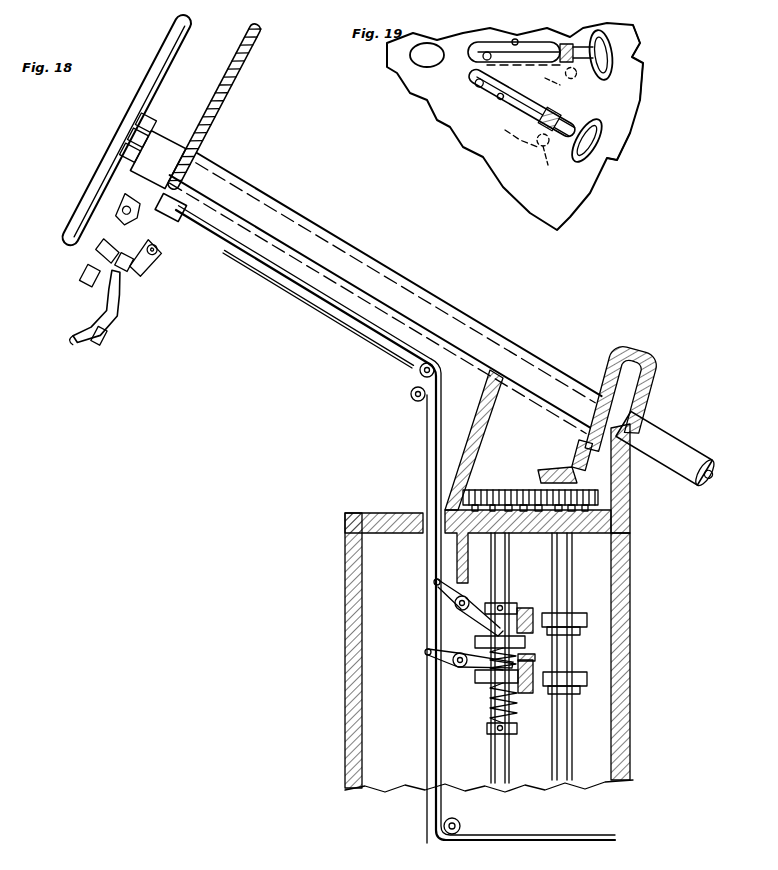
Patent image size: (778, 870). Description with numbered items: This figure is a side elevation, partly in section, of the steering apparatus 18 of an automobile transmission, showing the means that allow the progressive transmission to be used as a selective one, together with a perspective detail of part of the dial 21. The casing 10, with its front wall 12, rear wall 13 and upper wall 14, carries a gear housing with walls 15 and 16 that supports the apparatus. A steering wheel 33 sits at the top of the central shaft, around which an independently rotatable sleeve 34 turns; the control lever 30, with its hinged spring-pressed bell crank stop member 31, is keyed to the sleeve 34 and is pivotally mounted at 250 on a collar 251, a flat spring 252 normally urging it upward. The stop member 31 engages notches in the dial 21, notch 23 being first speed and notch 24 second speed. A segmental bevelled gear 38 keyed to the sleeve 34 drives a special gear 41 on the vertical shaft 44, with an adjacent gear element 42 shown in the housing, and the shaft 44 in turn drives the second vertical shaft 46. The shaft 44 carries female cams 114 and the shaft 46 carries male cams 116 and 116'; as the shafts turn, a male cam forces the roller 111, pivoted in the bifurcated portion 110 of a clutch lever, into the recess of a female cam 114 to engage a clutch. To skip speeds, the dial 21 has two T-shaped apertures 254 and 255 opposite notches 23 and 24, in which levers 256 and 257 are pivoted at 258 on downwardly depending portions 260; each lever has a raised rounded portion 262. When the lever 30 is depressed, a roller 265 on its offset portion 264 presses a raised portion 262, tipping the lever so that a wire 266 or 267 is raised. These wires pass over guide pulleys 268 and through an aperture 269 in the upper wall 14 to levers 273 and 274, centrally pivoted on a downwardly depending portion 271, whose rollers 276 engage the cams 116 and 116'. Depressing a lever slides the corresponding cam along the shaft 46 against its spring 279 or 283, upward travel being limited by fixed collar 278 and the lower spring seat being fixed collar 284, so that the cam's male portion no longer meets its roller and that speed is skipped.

In FIG. 18, the casing 10 is at (341, 566).
In FIG. 18, the front wall 12 is at (632, 629).
In FIG. 18, the rear wall 13 is at (345, 634).
In FIG. 18, the upper wall 14 is at (388, 512).
In FIG. 18, the gear housing wall 15 is at (631, 485).
In FIG. 18, the gear housing wall 16 is at (483, 422).
In FIG. 18, the steering apparatus 18 is at (339, 234).
In FIG. 18, the dial 21 is at (254, 71).
In FIG. 19, the dial 21 is at (515, 126).
In FIG. 18, the notch 23 is at (121, 312).
In FIG. 19, the notch 23 is at (617, 162).
In FIG. 19, the notch 24 is at (643, 61).
In FIG. 18, the control lever 30 is at (70, 340).
In FIG. 18, the bell crank stop member 31 is at (97, 345).
In FIG. 18, the steering wheel 33 is at (163, 58).
In FIG. 18, the sleeve 34 is at (696, 459).
In FIG. 18, the segmental bevelled gear 38 is at (587, 441).
In FIG. 18, the special gear 41 is at (548, 471).
In FIG. 18, the rack 42 is at (470, 490).
In FIG. 18, the vertical shaft 44 is at (572, 549).
In FIG. 18, the second vertical shaft 46 is at (511, 549).
In FIG. 18, the bifurcated portion 110 is at (526, 607).
In FIG. 18, the roller 111 is at (530, 625).
In FIG. 18, the female cam 114 is at (575, 613).
In FIG. 18, the male cam 116 is at (511, 636).
In FIG. 18, the male cam 116' is at (483, 688).
In FIG. 18, the pivot 250 is at (125, 214).
In FIG. 18, the collar 251 is at (181, 140).
In FIG. 18, the flat spring 252 is at (178, 218).
In FIG. 19, the T-shaped aperture 254 is at (500, 100).
In FIG. 19, the T-shaped aperture 255 is at (516, 40).
In FIG. 18, the lever 256 is at (164, 271).
In FIG. 19, the lever 256 is at (562, 121).
In FIG. 19, the lever 257 is at (575, 38).
In FIG. 18, the pivot 258 is at (159, 254).
In FIG. 19, the pivot 258 is at (568, 79).
In FIG. 19, the downwardly depending portion 260 is at (523, 140).
In FIG. 18, the raised rounded portion 262 is at (138, 267).
In FIG. 19, the raised rounded portion 262 is at (612, 46).
In FIG. 18, the offset portion 264 is at (107, 251).
In FIG. 18, the roller 265 is at (95, 281).
In FIG. 18, the wire 266 is at (371, 323).
In FIG. 18, the wire 267 is at (303, 302).
In FIG. 18, the guide pulleys 268 is at (420, 372).
In FIG. 18, the aperture 269 is at (426, 512).
In FIG. 18, the downwardly depending portion 271 is at (460, 559).
In FIG. 18, the lever 273 is at (478, 611).
In FIG. 18, the lever 274 is at (447, 648).
In FIG. 18, the rollers 276 is at (560, 659).
In FIG. 18, the fixed collar 278 is at (512, 601).
In FIG. 18, the spring 279 is at (487, 671).
In FIG. 18, the spring 283 is at (490, 706).
In FIG. 18, the fixed collar 284 is at (490, 734).